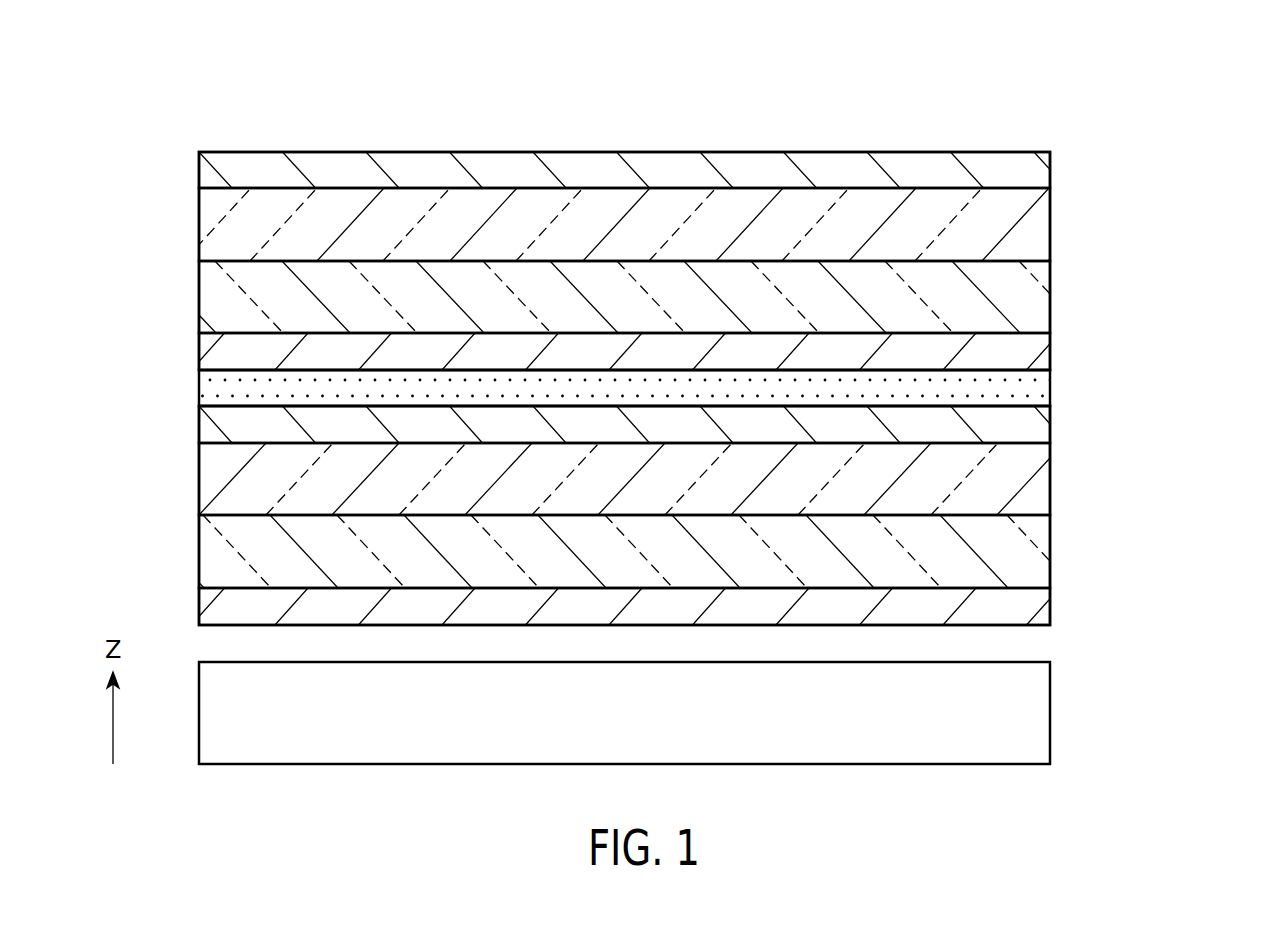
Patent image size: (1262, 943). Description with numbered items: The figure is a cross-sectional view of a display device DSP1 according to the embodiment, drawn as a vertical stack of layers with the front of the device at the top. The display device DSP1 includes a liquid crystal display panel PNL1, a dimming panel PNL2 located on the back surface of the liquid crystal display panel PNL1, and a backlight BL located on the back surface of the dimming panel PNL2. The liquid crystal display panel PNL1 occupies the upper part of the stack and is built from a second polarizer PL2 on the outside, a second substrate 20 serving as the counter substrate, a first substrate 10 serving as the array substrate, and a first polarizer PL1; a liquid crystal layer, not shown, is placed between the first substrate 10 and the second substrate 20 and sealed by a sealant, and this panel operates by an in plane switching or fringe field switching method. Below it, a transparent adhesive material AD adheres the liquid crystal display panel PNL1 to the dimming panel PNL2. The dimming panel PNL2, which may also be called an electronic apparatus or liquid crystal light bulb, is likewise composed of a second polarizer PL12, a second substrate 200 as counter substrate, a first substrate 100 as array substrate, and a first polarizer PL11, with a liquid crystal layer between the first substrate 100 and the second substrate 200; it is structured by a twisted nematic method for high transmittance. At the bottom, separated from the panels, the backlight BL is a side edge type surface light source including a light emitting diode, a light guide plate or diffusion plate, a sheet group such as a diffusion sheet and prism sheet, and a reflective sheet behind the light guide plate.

The display device DSP1 is at (1000, 78).
The liquid crystal display panel PNL1 is at (1148, 152).
The dimming panel PNL2 is at (1148, 405).
The second polarizer PL2 is at (1038, 175).
The second substrate 20 is at (1038, 230).
The first substrate 10 is at (1038, 303).
The first polarizer PL1 is at (1038, 352).
The transparent adhesive material AD is at (1038, 390).
The second polarizer PL12 is at (1038, 430).
The second substrate 200 is at (1038, 482).
The first substrate 100 is at (1038, 552).
The first polarizer PL11 is at (1038, 602).
The backlight BL is at (1038, 715).